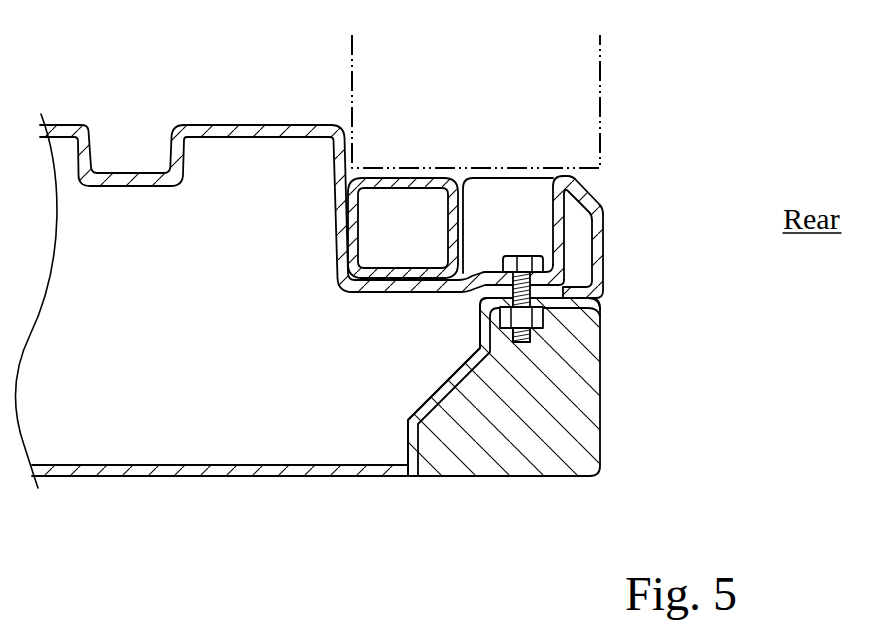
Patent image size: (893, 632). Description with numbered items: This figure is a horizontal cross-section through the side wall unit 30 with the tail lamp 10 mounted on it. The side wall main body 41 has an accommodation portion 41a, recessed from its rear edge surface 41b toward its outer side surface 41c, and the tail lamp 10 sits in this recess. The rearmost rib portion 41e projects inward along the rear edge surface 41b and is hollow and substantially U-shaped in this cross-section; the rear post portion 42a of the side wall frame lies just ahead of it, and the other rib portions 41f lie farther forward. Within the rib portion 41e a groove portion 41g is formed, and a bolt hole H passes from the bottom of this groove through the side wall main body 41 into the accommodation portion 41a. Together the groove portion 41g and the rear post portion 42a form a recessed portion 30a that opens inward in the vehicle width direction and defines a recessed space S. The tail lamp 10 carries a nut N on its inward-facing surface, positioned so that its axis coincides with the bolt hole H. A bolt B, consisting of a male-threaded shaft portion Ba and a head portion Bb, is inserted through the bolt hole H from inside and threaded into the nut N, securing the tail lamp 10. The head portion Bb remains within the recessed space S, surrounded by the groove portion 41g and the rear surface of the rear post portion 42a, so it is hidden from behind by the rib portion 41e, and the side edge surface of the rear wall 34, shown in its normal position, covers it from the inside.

The tail lamp 10 is at (597, 473).
The side wall unit 30 is at (548, 484).
The recessed portion 30a is at (483, 215).
The rear wall 34 is at (603, 72).
The side wall main body 41 is at (113, 476).
The accommodation portion 41a is at (473, 407).
The rear edge surface 41b is at (603, 273).
The outer side surface 41c is at (257, 477).
The rib portion 41e is at (568, 178).
The rib portion 41f is at (197, 125).
The groove portion 41g is at (510, 213).
The rear post portion 42a is at (388, 177).
The bolt B is at (523, 255).
The shaft portion Ba is at (525, 342).
The head portion Bb is at (538, 257).
The bolt hole H is at (590, 300).
The nut N is at (546, 322).
The recessed space S is at (510, 192).